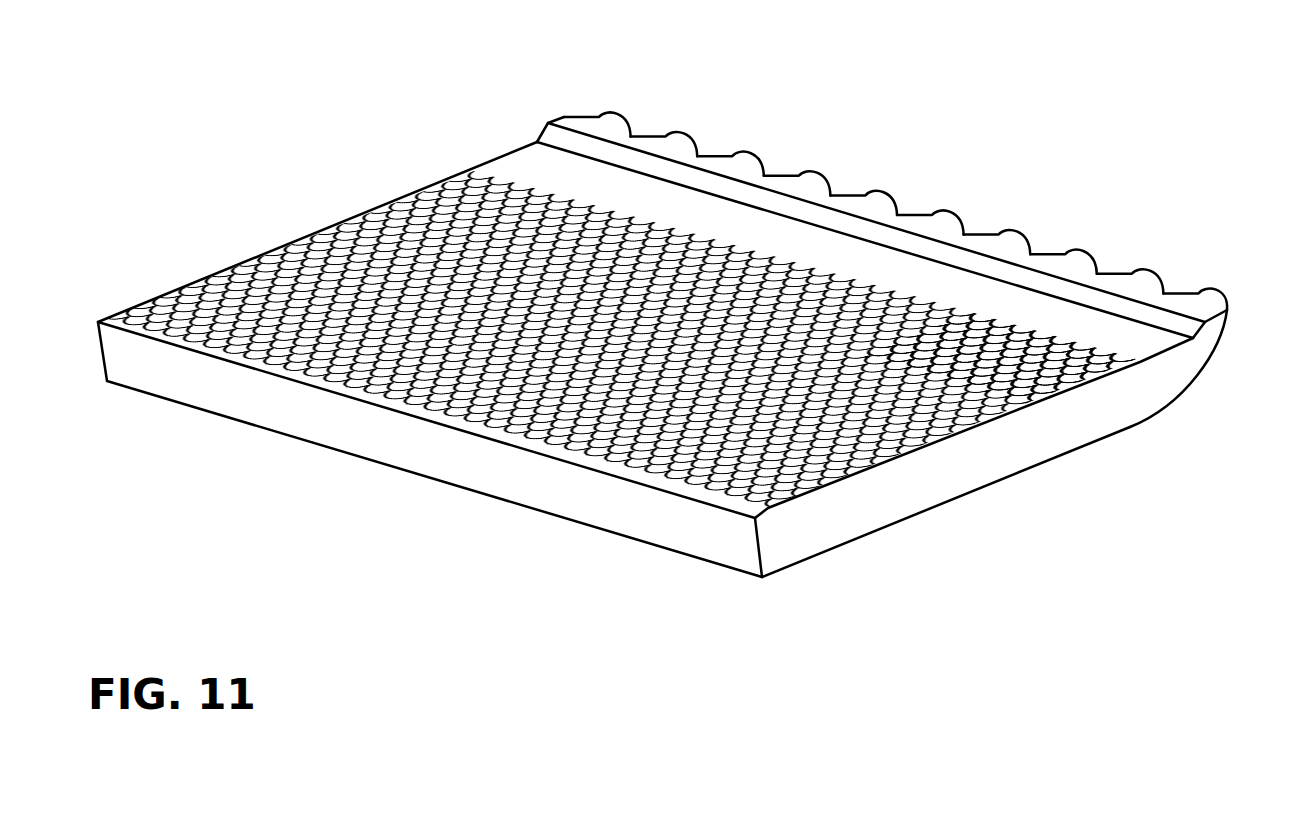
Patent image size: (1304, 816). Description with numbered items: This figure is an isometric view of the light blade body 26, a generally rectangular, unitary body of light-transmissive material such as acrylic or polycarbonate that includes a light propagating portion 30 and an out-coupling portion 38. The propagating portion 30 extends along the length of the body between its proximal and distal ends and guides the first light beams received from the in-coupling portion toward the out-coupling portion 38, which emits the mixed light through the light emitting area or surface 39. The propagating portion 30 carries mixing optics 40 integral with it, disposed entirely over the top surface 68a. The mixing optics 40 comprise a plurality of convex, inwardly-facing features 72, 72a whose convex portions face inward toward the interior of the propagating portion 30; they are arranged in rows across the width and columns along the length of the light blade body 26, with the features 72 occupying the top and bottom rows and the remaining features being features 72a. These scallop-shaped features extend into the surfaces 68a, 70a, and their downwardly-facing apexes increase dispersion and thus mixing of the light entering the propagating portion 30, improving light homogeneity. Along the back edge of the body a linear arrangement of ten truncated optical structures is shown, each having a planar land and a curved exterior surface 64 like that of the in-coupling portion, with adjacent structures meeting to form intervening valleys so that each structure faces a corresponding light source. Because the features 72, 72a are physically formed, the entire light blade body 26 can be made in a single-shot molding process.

The light blade body 26 is at (488, 158).
The top surface 68a is at (625, 331).
The mixing optics 40 is at (1062, 352).
The light emitting area or surface 39 is at (371, 453).
The out-coupling portion 38 is at (748, 532).
The convex inwardly-facing features 72 is at (1003, 494).
The convex inwardly-facing features 72a is at (1097, 373).
The light propagating portion 30 is at (953, 519).
The surface 70a is at (855, 545).
The curved surface 64 is at (1213, 350).